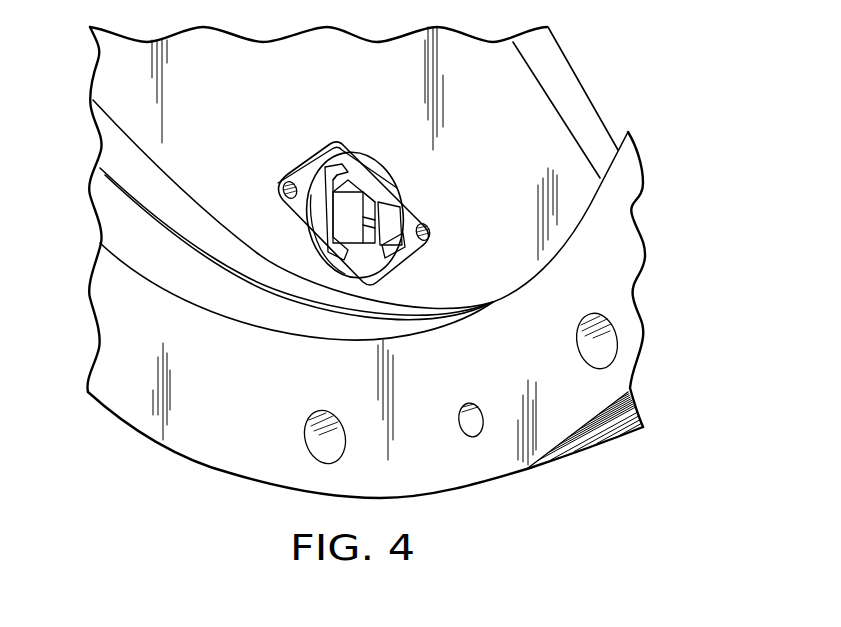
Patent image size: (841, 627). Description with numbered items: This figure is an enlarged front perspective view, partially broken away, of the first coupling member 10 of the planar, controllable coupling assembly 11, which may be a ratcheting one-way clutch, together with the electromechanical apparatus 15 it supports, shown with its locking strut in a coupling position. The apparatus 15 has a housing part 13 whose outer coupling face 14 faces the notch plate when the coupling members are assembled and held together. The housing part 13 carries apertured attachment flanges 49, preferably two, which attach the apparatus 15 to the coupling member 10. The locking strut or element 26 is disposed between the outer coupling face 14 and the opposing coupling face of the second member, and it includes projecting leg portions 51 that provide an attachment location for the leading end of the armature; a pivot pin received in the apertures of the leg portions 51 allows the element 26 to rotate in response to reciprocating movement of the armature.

The first coupling member 10 is at (612, 125).
The coupling assembly 11 is at (602, 61).
The housing part 13 is at (345, 146).
The outer coupling face 14 is at (367, 182).
The electromechanical apparatus 15 is at (403, 188).
The locking strut 26 is at (333, 221).
The apertured attachment flange 49 is at (280, 192).
The projecting leg portion 51 is at (384, 258).